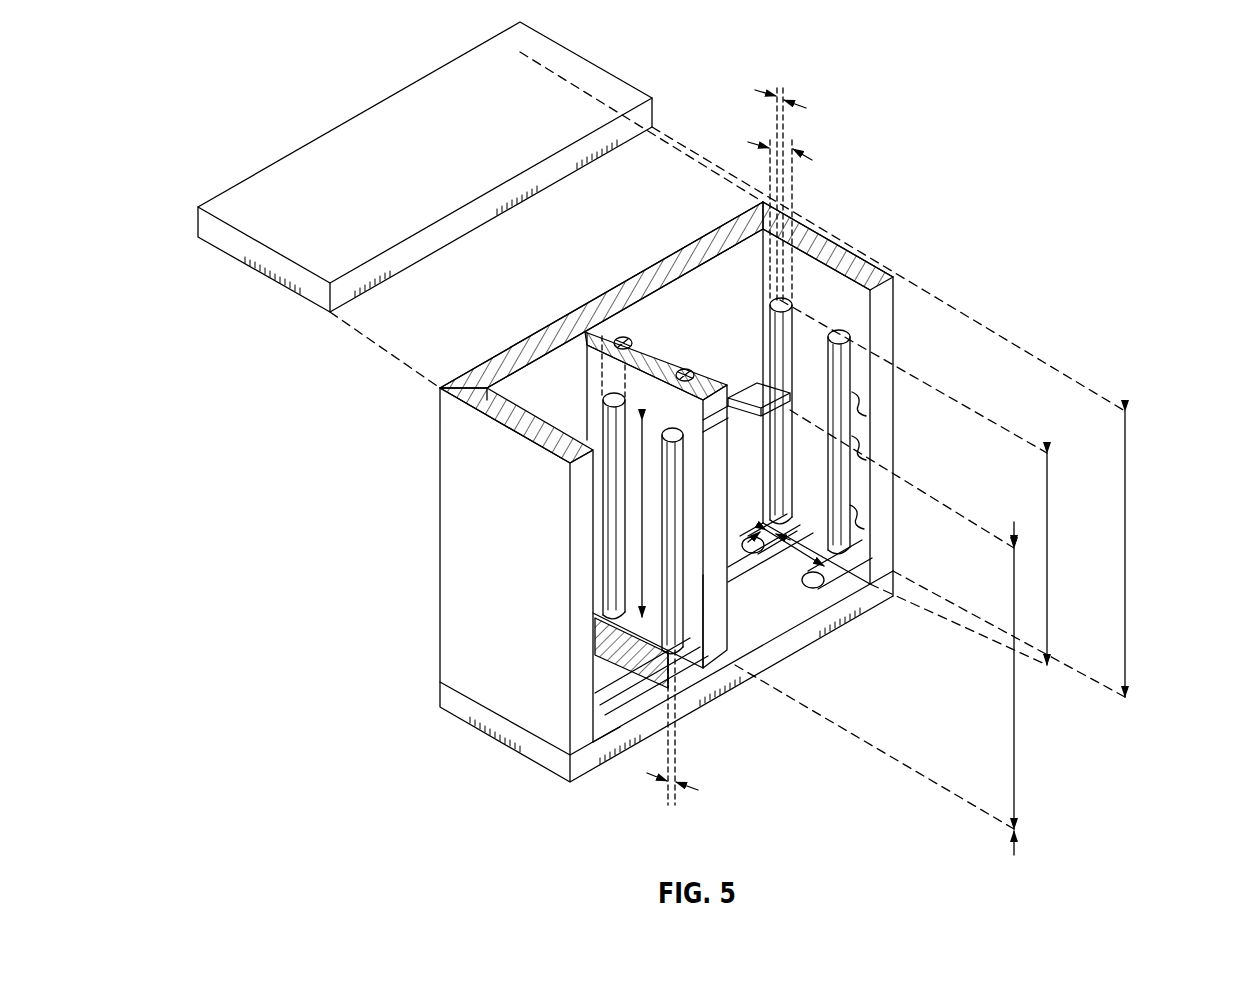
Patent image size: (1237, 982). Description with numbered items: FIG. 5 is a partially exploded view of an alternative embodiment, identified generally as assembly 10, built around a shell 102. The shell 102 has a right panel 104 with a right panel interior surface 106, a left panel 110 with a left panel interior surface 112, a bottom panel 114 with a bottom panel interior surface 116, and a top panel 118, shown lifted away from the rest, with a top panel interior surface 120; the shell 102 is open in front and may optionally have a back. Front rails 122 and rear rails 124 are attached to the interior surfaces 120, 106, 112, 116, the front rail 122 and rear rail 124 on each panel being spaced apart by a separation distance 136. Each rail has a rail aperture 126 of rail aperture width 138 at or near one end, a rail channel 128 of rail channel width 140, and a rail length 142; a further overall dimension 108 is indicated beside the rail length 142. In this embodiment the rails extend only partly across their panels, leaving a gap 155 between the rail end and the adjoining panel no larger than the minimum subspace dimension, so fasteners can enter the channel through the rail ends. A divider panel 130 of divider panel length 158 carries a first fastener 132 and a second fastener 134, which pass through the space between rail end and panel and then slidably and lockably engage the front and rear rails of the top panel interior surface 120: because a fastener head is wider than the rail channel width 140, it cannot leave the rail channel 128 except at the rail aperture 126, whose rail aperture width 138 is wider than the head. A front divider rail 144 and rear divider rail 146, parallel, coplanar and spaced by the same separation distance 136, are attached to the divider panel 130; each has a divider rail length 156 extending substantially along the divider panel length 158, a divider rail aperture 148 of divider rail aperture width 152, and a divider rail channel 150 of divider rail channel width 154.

The bracket 10 is at (752, 394).
The shell 102 is at (768, 214).
The right panel 104 is at (896, 322).
The right panel interior surface 106 is at (856, 441).
The overall height 108 is at (1128, 548).
The left panel 110 is at (456, 578).
The left panel interior surface 112 is at (607, 543).
The bottom panel 114 is at (818, 638).
The bottom panel interior surface 116 is at (628, 742).
The top panel 118 is at (590, 92).
The top panel interior surface 120 is at (238, 262).
The front rail 122 is at (855, 398).
The rear rail 124 is at (771, 322).
The rail aperture 126 is at (840, 334).
The rail channel 128 is at (854, 512).
The divider panel 130 is at (745, 585).
The first fastener 132 is at (678, 368).
The second fastener 134 is at (615, 335).
The separation distance 136 is at (822, 616).
The rail aperture width 138 is at (808, 158).
The rail channel width 140 is at (802, 106).
The rail length 142 is at (1050, 560).
The front divider rail 144 is at (738, 622).
The rear divider rail 146 is at (598, 418).
The divider rail aperture 148 is at (626, 372).
The divider rail channel 150 is at (712, 585).
The divider rail aperture width 152 is at (597, 360).
The divider rail channel width 154 is at (680, 798).
The gap to adjoining panel 155 is at (766, 528).
The divider rail length 156 is at (668, 605).
The divider panel length 158 is at (1017, 690).